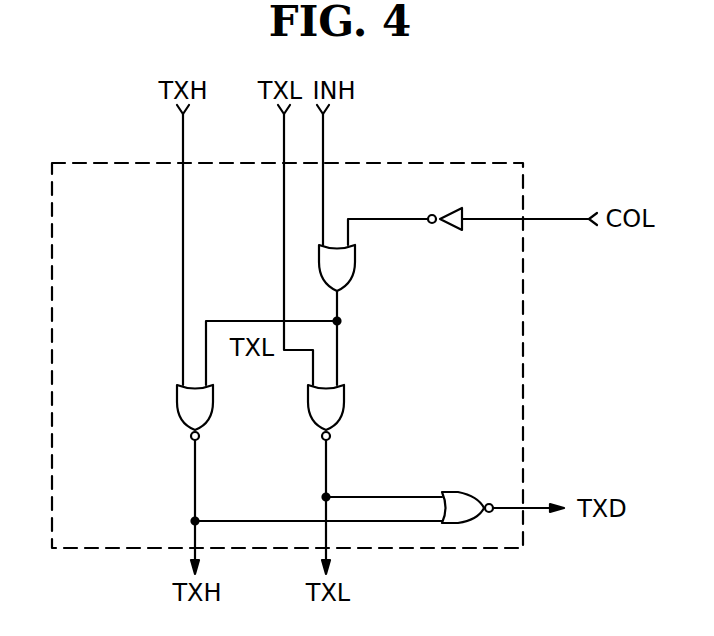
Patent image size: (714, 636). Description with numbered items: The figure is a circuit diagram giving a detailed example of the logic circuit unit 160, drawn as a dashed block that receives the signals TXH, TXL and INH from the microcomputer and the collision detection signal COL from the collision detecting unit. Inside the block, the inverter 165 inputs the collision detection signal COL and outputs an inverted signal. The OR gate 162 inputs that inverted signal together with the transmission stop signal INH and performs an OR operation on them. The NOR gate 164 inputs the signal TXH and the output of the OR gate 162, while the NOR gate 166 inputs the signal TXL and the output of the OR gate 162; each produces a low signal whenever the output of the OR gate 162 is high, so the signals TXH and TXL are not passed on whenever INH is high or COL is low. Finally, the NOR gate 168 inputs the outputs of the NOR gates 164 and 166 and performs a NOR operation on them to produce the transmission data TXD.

The logic circuit unit 160 is at (523, 263).
The OR gate 162 is at (355, 258).
The NOR gate 164 is at (177, 398).
The inverter 165 is at (463, 210).
The NOR gate 166 is at (344, 398).
The NOR gate 168 is at (450, 492).